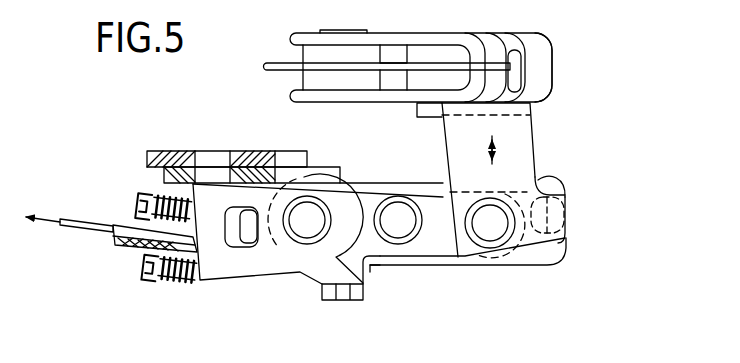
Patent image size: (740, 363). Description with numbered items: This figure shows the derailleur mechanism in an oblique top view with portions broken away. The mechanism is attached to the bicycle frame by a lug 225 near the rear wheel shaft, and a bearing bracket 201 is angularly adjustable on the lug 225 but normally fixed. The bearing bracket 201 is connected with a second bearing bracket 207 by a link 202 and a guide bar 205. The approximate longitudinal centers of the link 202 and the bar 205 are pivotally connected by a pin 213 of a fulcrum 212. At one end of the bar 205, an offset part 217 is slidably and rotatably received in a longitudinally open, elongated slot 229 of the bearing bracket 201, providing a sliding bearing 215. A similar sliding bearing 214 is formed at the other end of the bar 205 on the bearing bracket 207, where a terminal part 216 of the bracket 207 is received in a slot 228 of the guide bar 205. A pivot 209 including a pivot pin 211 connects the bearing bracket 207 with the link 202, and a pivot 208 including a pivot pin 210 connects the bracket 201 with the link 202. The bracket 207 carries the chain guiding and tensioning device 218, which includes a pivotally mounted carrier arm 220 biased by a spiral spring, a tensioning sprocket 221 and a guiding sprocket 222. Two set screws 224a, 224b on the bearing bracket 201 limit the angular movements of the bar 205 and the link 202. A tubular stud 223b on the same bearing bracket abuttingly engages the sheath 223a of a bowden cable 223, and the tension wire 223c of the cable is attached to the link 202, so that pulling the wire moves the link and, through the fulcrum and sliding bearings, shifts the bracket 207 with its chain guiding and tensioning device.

The bearing bracket 201 is at (281, 253).
The link 202 is at (438, 233).
The guide bar 205 is at (565, 250).
The bearing bracket 207 is at (530, 237).
The pivot 208 is at (334, 236).
The pivot 209 is at (514, 243).
The pivot pin 210 is at (307, 215).
The pivot pin 211 is at (497, 217).
The fulcrum 212 is at (389, 190).
The pin 213 is at (406, 228).
The sliding bearing 214 is at (574, 223).
The sliding bearing 215 is at (258, 195).
The terminal part 216 is at (568, 207).
The offset part 217 is at (247, 242).
The chain guiding and tensioning device 218 is at (555, 66).
The carrier arm 220 is at (346, 100).
The tensioning sprocket 221 is at (456, 66).
The guiding sprocket 222 is at (283, 62).
The bowden cable 223 is at (99, 216).
The sheath 223a is at (133, 253).
The tubular stud 223b is at (200, 272).
The tension wire 223c is at (80, 233).
The set screw 224a is at (150, 284).
The set screw 224b is at (145, 194).
The lug 225 is at (182, 122).
The slot 228 is at (540, 190).
The elongated slot 229 is at (240, 207).